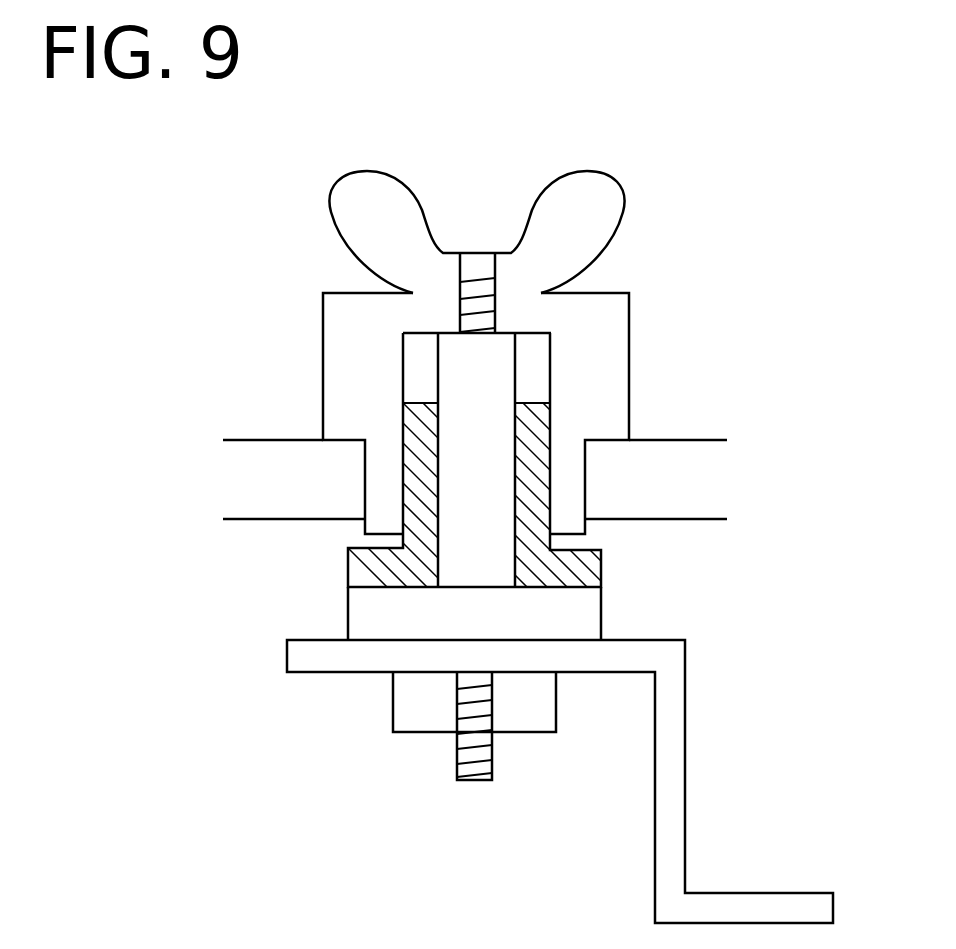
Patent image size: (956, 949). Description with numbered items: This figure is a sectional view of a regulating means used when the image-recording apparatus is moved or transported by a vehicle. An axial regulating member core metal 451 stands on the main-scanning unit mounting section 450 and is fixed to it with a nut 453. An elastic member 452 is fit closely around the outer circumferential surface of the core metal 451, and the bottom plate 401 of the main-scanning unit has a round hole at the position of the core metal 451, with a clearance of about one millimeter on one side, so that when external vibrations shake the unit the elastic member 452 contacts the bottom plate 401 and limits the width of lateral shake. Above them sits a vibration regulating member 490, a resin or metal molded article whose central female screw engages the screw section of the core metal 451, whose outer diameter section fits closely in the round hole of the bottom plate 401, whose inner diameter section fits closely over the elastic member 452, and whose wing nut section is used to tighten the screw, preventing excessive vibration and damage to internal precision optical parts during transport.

The bottom plate 401 is at (260, 437).
The main-scanning unit mounting section 450 is at (748, 893).
The axial regulating member core metal 451 is at (557, 616).
The elastic member 452 is at (550, 428).
The nut 453 is at (519, 733).
The vibration regulating member 490 is at (600, 323).